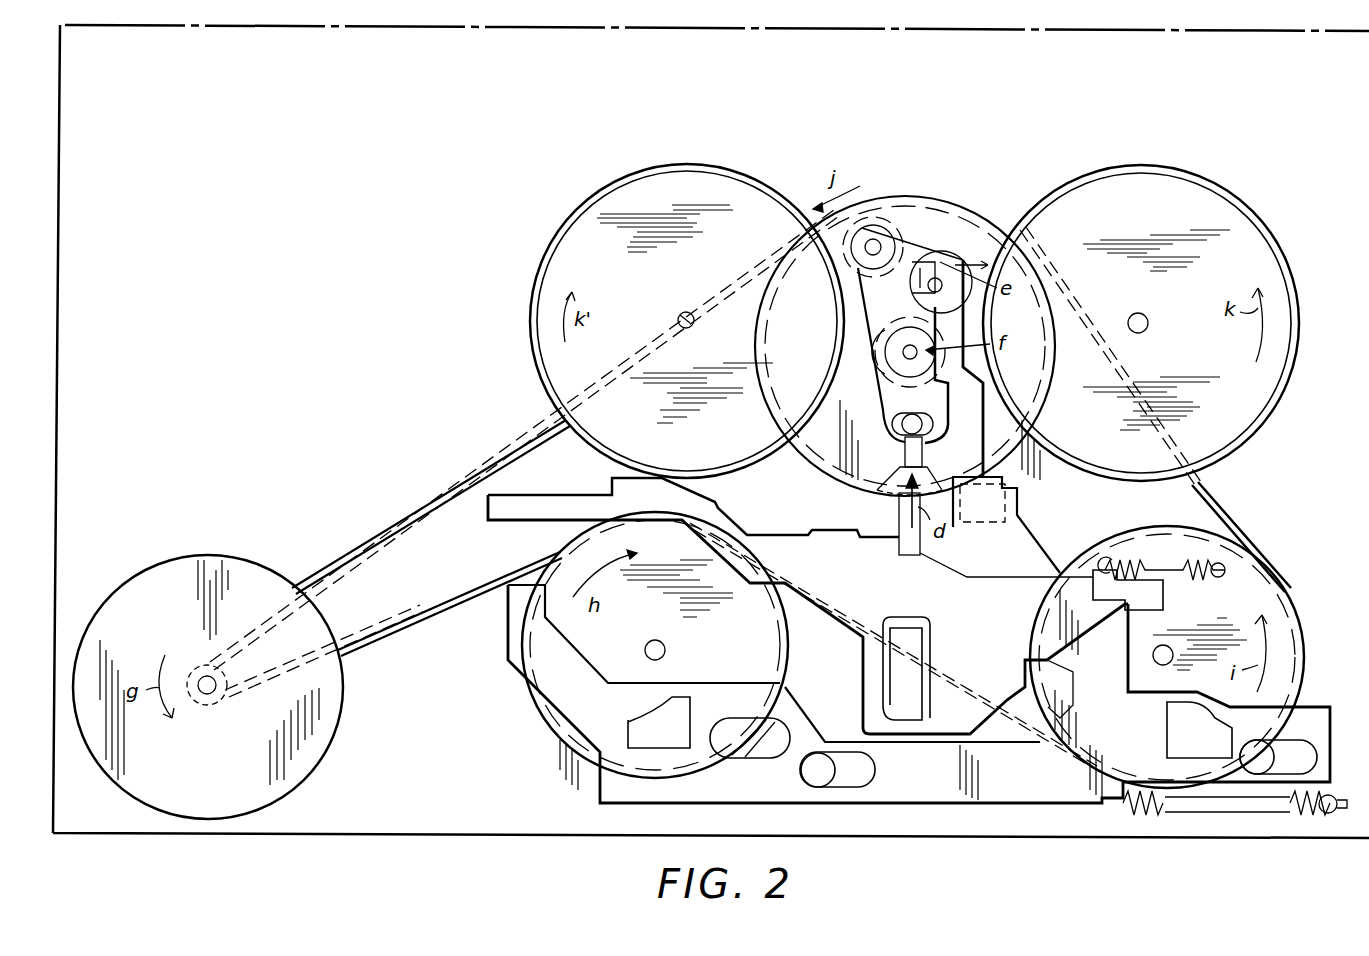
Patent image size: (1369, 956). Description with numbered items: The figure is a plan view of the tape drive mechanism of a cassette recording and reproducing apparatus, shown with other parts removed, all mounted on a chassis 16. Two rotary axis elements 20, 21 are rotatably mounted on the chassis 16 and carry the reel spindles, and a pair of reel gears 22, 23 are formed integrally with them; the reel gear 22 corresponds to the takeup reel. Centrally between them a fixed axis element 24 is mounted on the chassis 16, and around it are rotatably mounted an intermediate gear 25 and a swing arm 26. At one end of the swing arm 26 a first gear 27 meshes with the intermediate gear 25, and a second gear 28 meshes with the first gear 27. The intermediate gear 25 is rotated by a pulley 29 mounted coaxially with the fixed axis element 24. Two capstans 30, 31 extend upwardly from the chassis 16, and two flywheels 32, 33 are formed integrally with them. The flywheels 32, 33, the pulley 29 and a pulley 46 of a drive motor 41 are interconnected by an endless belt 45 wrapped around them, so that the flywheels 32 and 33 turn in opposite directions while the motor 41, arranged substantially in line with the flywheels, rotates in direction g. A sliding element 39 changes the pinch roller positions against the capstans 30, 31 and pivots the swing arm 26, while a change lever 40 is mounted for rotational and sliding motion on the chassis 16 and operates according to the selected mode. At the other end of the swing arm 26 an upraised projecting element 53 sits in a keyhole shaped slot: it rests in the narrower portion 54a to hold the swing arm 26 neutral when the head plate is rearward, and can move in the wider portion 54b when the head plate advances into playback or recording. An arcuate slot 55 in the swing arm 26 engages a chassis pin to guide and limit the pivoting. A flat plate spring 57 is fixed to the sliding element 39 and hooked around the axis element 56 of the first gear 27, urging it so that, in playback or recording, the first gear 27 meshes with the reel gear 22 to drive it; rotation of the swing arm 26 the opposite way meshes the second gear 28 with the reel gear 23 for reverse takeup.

The chassis 16 is at (95, 505).
The rotary axis element 20 is at (1140, 313).
The rotary axis element 21 is at (680, 314).
The reel gear 22 is at (1258, 212).
The reel gear 23 is at (568, 247).
The fixed axis element 24 is at (900, 350).
The intermediate gear 25 is at (878, 358).
The swing arm 26 is at (882, 420).
The first gear 27 is at (950, 236).
The second gear 28 is at (860, 262).
The pulley 29 is at (918, 205).
The capstan 30 is at (1165, 645).
The capstan 31 is at (665, 651).
The flywheel 32 is at (1268, 576).
The flywheel 33 is at (784, 657).
The sliding element 39 is at (605, 782).
The change lever 40 is at (788, 537).
The drive motor 41 is at (225, 553).
The endless belt 45 is at (434, 496).
The pulley 46 is at (218, 708).
The projecting element 53 is at (924, 472).
The narrower portion of slot 54a is at (904, 456).
The wider portion of slot 54b is at (898, 500).
The arcuate slot 55 is at (892, 426).
The axis element 56 is at (948, 288).
The flat plate spring 57 is at (977, 447).